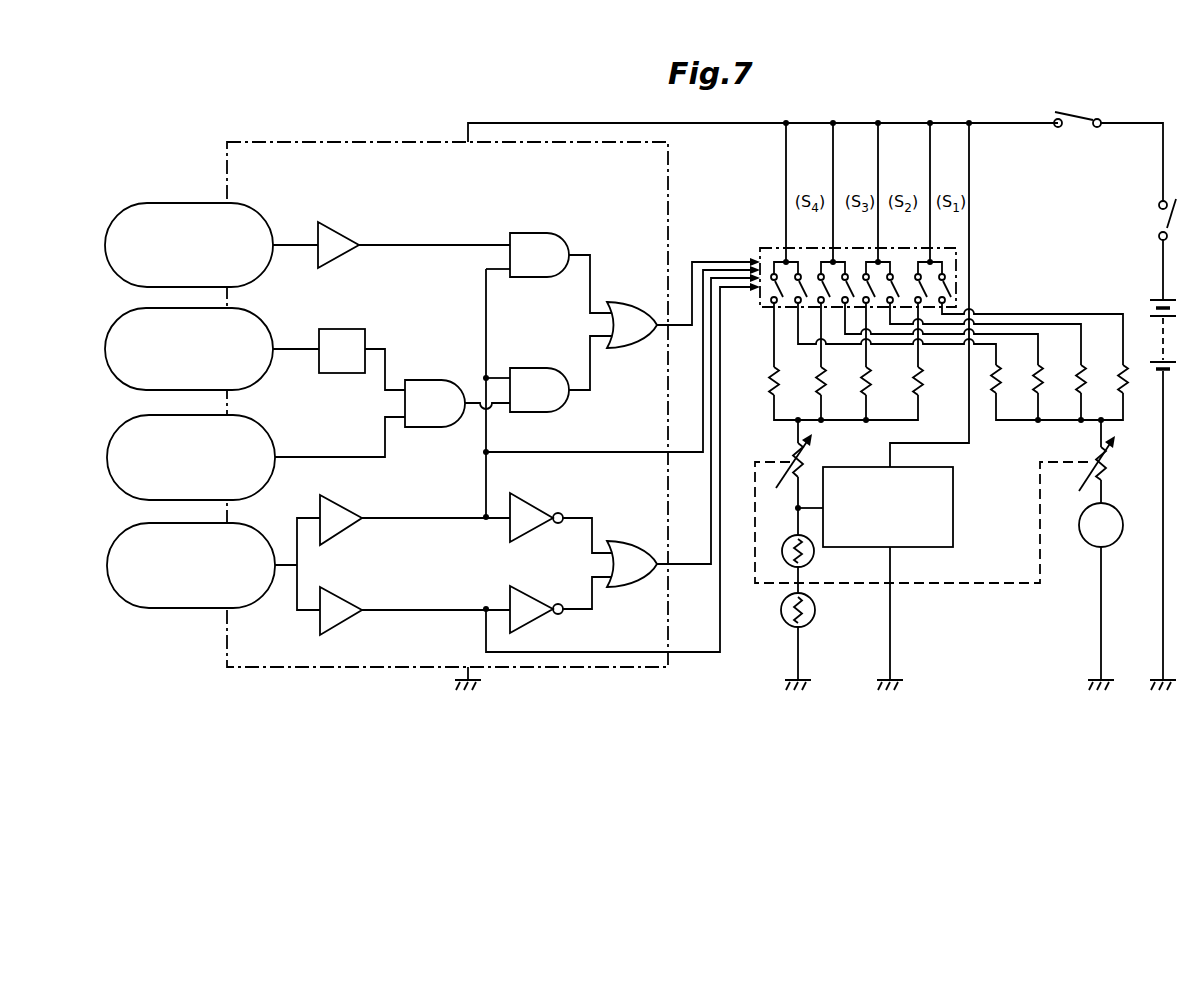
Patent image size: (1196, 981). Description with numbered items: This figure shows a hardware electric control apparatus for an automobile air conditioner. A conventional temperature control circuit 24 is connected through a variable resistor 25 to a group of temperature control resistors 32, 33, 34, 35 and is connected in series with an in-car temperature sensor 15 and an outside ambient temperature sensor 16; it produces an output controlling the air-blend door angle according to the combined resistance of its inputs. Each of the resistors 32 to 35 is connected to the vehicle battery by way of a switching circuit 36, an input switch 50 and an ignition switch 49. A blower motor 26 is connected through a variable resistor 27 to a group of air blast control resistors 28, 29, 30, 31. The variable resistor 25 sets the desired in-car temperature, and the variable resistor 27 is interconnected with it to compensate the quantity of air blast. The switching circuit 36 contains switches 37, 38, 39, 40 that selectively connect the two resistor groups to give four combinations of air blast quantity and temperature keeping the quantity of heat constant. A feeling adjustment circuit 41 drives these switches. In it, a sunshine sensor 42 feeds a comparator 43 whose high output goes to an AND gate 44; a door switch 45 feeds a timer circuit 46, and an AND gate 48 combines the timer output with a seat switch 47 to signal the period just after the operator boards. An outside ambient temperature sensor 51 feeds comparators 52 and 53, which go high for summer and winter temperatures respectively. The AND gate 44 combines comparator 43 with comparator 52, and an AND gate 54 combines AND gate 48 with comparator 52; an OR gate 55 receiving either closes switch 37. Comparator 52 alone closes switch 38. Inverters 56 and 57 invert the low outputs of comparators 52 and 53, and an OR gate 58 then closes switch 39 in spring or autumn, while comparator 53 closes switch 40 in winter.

The in-car temperature sensor 15 is at (793, 556).
The outside ambient temperature sensor 16 is at (816, 614).
The temperature control circuit 24 is at (955, 491).
The variable resistor 25 is at (797, 463).
The blower motor 26 is at (1122, 535).
The variable resistor 27 is at (1110, 463).
The air blast control resistor 28 is at (1123, 378).
The air blast control resistor 29 is at (1081, 378).
The air blast control resistor 30 is at (1038, 378).
The air blast control resistor 31 is at (996, 378).
The temperature control resistor 32 is at (918, 377).
The temperature control resistor 33 is at (866, 377).
The temperature control resistor 34 is at (821, 375).
The temperature control resistor 35 is at (772, 375).
The switching circuit 36 is at (762, 248).
The switch 37 is at (946, 275).
The switch 38 is at (899, 275).
The switch 39 is at (853, 275).
The switch 40 is at (806, 275).
The feeling adjustment circuit 41 is at (340, 140).
The sunshine sensor 42 is at (150, 203).
The comparator 43 is at (342, 238).
The AND gate 44 is at (540, 235).
The door switch 45 is at (147, 310).
The timer circuit 46 is at (346, 329).
The seat switch 47 is at (150, 417).
The AND gate 48 is at (430, 382).
The ignition switch 49 is at (1160, 214).
The input switch 50 is at (1085, 118).
The outside ambient temperature sensor 51 is at (152, 523).
The comparator 52 is at (350, 510).
The comparator 53 is at (350, 605).
The AND gate 54 is at (534, 370).
The OR gate 55 is at (622, 303).
The inverter 56 is at (537, 512).
The inverter 57 is at (530, 602).
The OR gate 58 is at (620, 543).